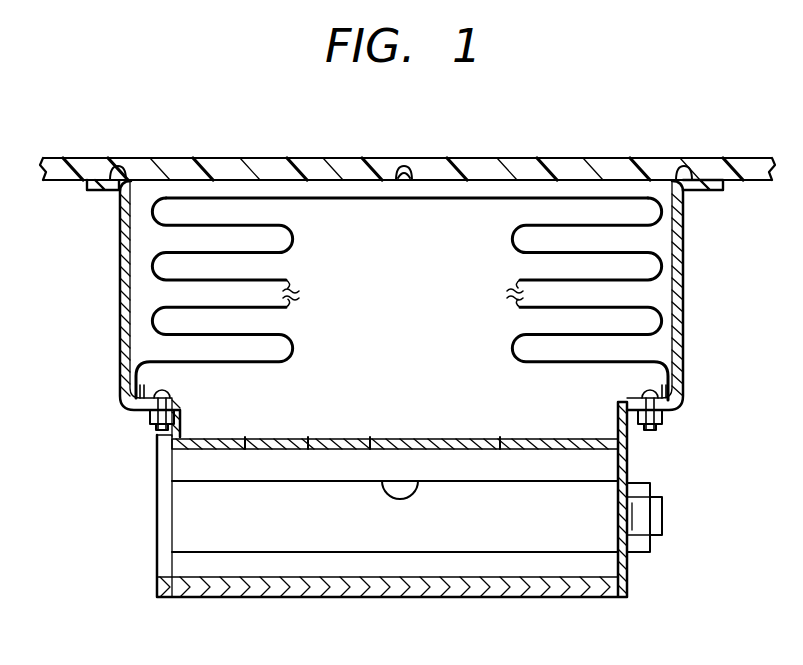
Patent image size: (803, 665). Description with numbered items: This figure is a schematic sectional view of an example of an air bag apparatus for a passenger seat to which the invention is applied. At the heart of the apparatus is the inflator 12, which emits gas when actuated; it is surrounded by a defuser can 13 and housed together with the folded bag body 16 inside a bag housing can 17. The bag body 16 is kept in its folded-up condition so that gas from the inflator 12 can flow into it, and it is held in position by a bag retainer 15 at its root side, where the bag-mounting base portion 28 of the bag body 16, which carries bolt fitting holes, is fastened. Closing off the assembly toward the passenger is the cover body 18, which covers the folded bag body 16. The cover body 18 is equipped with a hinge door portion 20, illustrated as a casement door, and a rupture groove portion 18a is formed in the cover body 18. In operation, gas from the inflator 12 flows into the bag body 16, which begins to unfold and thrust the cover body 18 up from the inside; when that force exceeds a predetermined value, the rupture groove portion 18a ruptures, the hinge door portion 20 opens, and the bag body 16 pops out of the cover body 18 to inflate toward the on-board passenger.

The inflator 12 is at (490, 538).
The defuser can 13 is at (628, 458).
The bag retainer 15 is at (128, 372).
The bag body 16 is at (650, 270).
The bag housing can 17 is at (688, 320).
The cover body 18 is at (733, 160).
The rupture groove portion 18a is at (398, 165).
The hinge door portion 20 is at (511, 166).
The bag-mounting base portion 28 is at (668, 418).